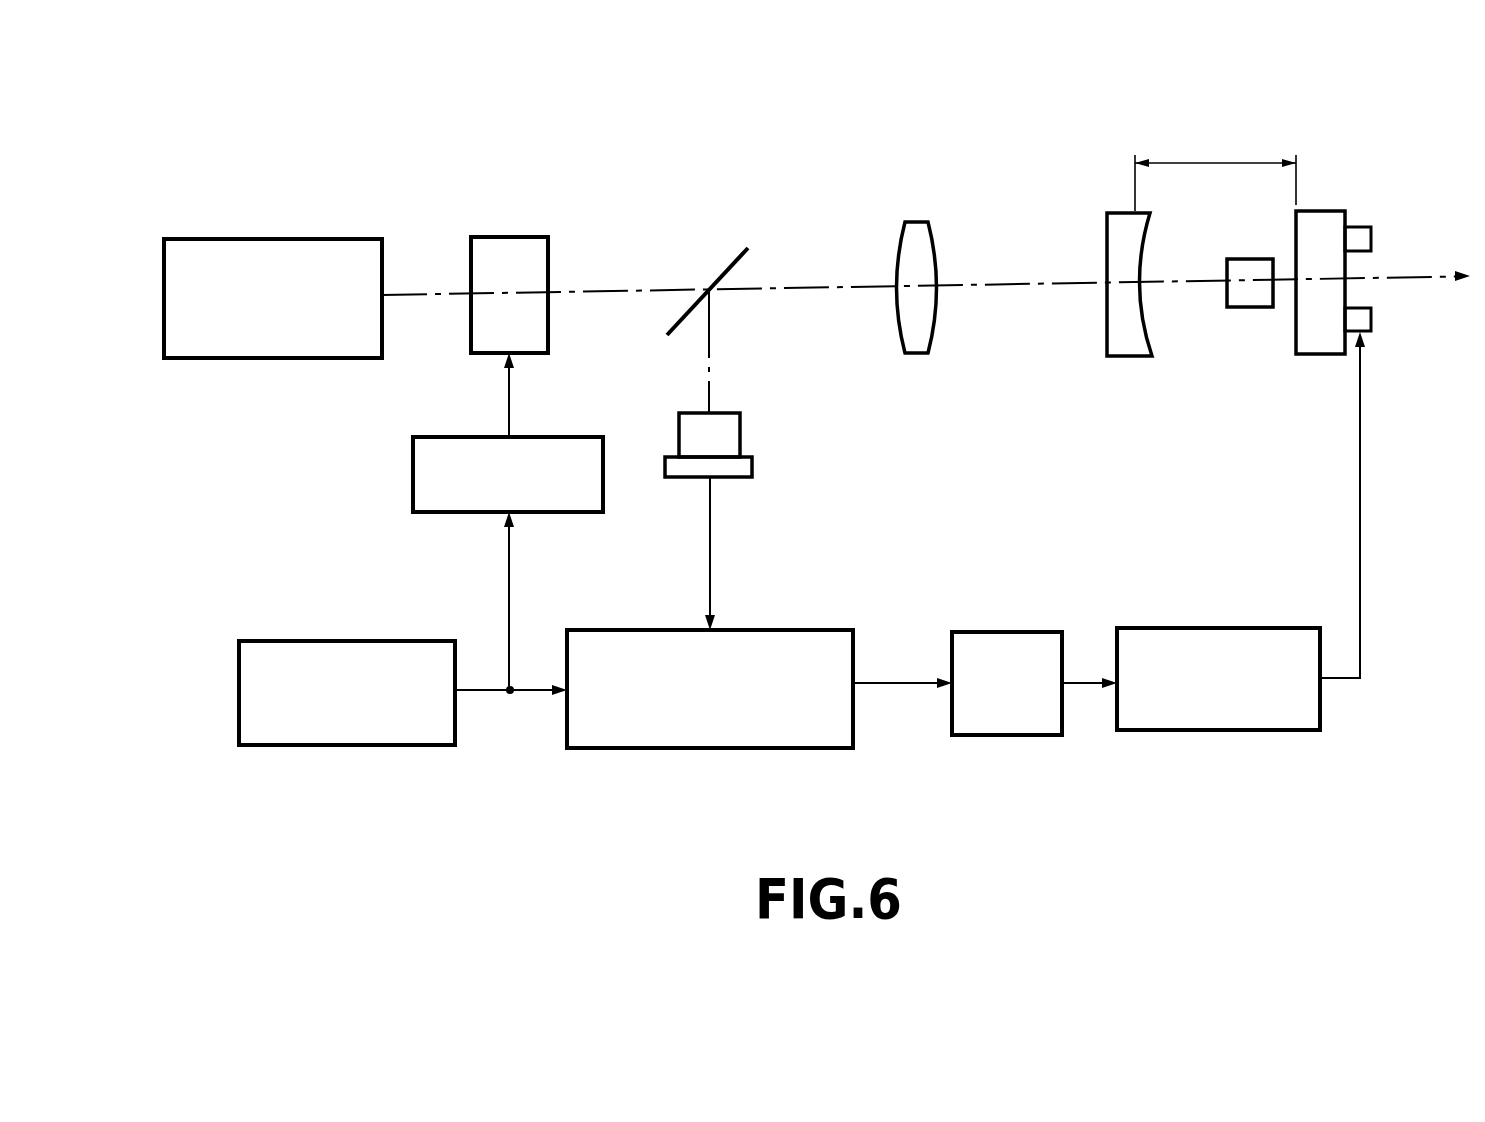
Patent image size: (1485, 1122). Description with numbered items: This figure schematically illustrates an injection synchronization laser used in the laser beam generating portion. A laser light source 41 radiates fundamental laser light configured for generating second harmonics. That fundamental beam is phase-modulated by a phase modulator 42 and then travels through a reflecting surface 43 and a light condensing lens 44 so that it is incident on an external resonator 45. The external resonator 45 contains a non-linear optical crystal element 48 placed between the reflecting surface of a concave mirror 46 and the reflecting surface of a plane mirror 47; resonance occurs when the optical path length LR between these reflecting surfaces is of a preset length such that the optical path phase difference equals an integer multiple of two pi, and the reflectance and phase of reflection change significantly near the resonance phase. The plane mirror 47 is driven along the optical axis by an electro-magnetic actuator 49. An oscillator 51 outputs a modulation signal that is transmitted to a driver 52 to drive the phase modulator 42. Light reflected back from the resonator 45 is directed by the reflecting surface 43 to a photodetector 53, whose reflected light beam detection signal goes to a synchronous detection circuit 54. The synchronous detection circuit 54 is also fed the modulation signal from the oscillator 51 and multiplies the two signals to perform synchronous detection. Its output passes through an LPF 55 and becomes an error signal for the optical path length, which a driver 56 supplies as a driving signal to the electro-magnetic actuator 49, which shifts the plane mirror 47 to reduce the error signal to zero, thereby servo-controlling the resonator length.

The laser light source 41 is at (282, 239).
The phase modulator 42 is at (505, 237).
The reflecting surface 43 is at (730, 265).
The light condensing lens 44 is at (912, 222).
The external resonator 45 is at (1272, 126).
The concave mirror 46 is at (1133, 356).
The plane mirror 47 is at (1305, 354).
The non-linear optical crystal element 48 is at (1243, 307).
The electro-magnetic actuator 49 is at (1390, 300).
The oscillator 51 is at (340, 745).
The driver 52 is at (413, 475).
The photodetector 53 is at (740, 443).
The synchronous detection circuit 54 is at (710, 748).
The LPF 55 is at (990, 735).
The driver 56 is at (1210, 730).